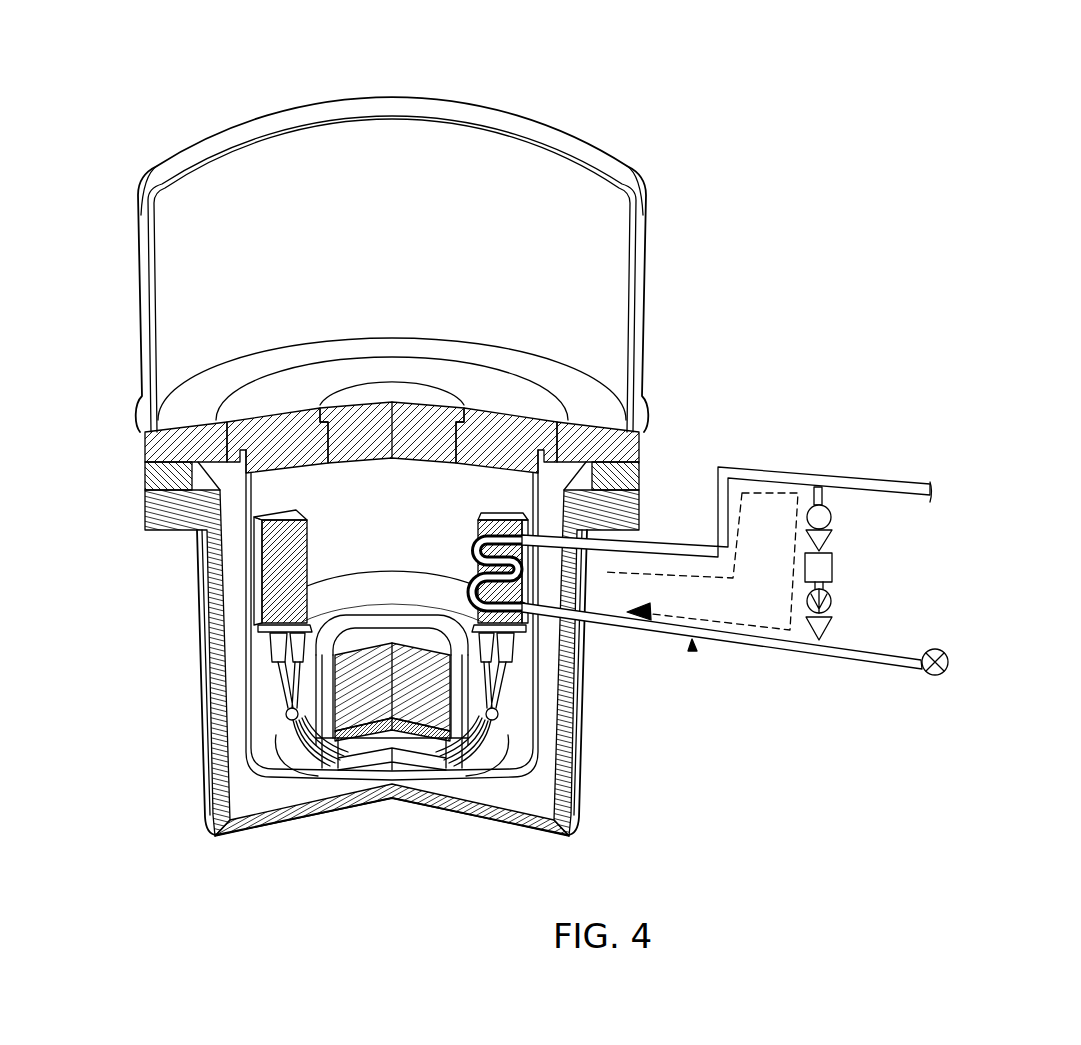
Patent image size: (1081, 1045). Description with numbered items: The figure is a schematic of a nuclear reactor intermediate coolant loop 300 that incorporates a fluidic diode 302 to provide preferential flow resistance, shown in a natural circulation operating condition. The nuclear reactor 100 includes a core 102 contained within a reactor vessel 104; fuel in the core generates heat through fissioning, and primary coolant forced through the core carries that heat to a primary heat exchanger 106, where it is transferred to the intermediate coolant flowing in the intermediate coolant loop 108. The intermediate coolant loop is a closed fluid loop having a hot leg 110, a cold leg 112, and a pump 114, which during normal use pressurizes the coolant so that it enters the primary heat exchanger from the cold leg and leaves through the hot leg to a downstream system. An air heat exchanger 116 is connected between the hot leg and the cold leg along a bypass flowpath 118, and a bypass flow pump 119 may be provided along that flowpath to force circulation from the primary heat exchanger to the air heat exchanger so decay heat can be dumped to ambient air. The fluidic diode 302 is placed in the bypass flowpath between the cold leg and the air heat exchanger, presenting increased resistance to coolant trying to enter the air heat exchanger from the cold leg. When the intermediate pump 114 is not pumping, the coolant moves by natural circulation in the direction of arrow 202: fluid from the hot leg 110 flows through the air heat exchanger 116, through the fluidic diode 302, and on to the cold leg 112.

The nuclear reactor 100 is at (488, 85).
The core 102 is at (362, 694).
The reactor vessel 104 is at (202, 637).
The primary heat exchanger 106 is at (505, 621).
The intermediate coolant loop 108 is at (693, 650).
The hot leg 110 is at (862, 482).
The cold leg 112 is at (725, 638).
The pump 114 is at (946, 675).
The air heat exchanger 116 is at (822, 572).
The bypass flowpath 118 is at (825, 497).
The bypass flow pump 119 is at (830, 520).
The arrow 202 is at (647, 618).
The nuclear reactor intermediate coolant loop 300 is at (787, 435).
The fluidic diode 302 is at (827, 609).